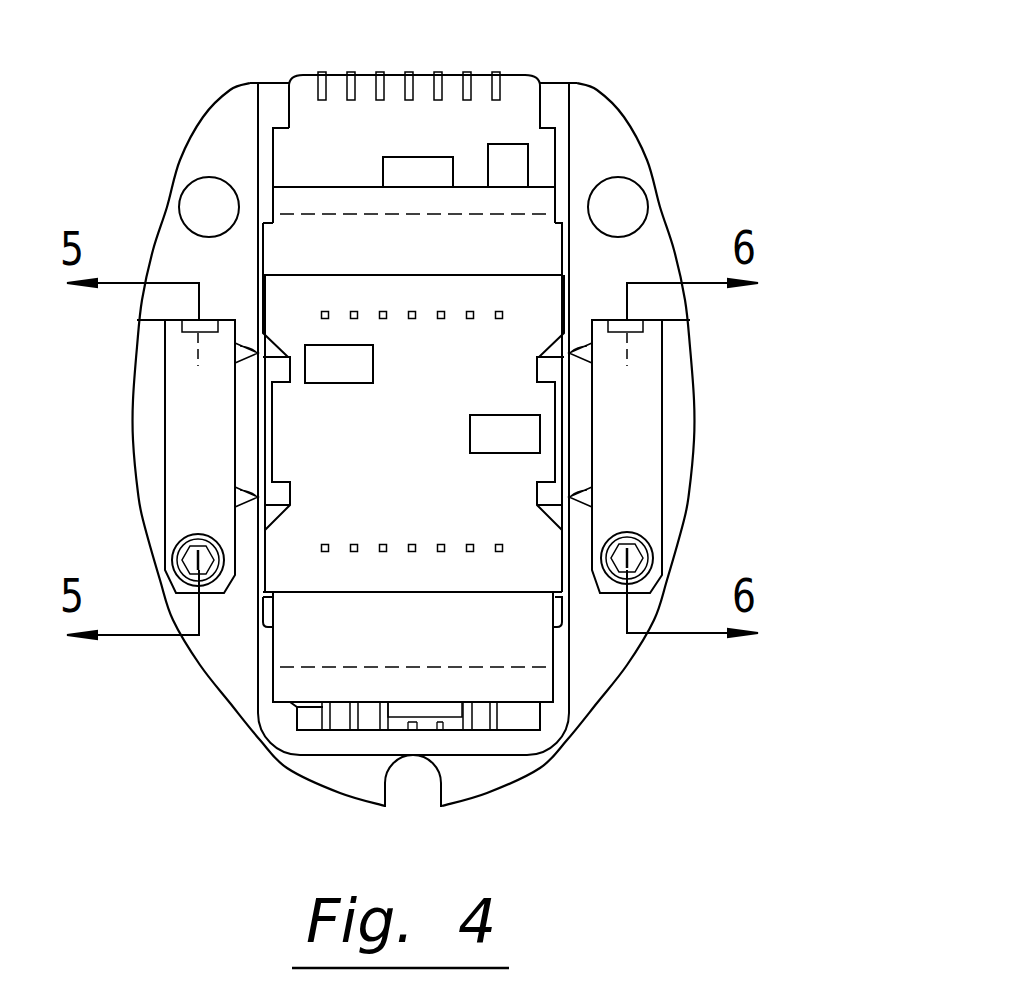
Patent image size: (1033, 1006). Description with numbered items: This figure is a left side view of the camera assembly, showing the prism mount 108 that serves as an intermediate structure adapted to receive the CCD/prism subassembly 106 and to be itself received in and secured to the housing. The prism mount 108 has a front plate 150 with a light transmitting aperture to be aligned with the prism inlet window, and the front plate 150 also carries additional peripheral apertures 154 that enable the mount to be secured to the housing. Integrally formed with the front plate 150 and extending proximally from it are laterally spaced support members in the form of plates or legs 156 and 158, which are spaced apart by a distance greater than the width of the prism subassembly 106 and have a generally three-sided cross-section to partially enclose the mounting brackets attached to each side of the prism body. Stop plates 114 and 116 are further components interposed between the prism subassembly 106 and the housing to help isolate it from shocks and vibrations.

The CCD/prism subassembly 106 is at (527, 100).
The prism mount 108 is at (231, 90).
The front plate 150 is at (625, 122).
The peripheral apertures 154 is at (190, 197).
The support leg 156 is at (148, 347).
The support leg 158 is at (683, 368).
The stop plate 114 is at (175, 478).
The stop plate 116 is at (650, 470).